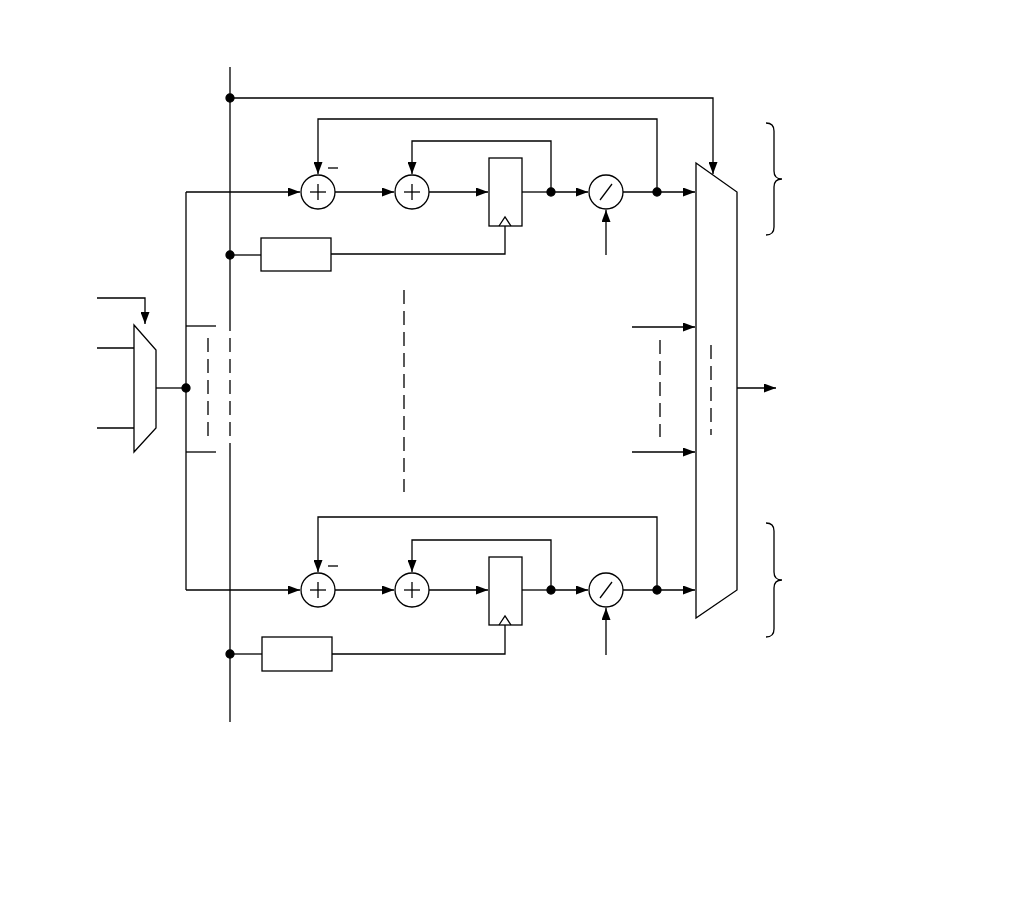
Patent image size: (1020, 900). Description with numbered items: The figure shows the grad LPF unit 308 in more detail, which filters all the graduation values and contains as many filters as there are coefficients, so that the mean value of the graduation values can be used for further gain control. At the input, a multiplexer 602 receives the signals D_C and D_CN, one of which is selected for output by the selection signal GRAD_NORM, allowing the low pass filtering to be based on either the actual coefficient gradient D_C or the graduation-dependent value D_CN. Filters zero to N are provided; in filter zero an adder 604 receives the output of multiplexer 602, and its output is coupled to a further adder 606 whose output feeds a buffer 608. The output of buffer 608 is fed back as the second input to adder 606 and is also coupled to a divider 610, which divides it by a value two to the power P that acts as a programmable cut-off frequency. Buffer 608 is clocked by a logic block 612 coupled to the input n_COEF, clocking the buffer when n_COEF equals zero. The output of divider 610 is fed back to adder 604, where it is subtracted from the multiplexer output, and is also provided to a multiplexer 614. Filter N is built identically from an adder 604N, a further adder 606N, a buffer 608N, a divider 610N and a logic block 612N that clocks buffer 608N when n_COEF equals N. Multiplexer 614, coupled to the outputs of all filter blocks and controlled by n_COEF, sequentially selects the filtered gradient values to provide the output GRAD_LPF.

The grad LPF unit 308 is at (130, 108).
The multiplexer 602 is at (143, 432).
The adder 604 is at (330, 204).
The further adder 606 is at (424, 204).
The buffer 608 is at (522, 208).
The divider 610 is at (606, 176).
The logic block 612 is at (298, 272).
The adder 604N is at (330, 602).
The further adder 606N is at (424, 602).
The buffer 608N is at (522, 606).
The divider 610N is at (618, 604).
The logic block 612N is at (318, 672).
The multiplexer 614 is at (722, 518).